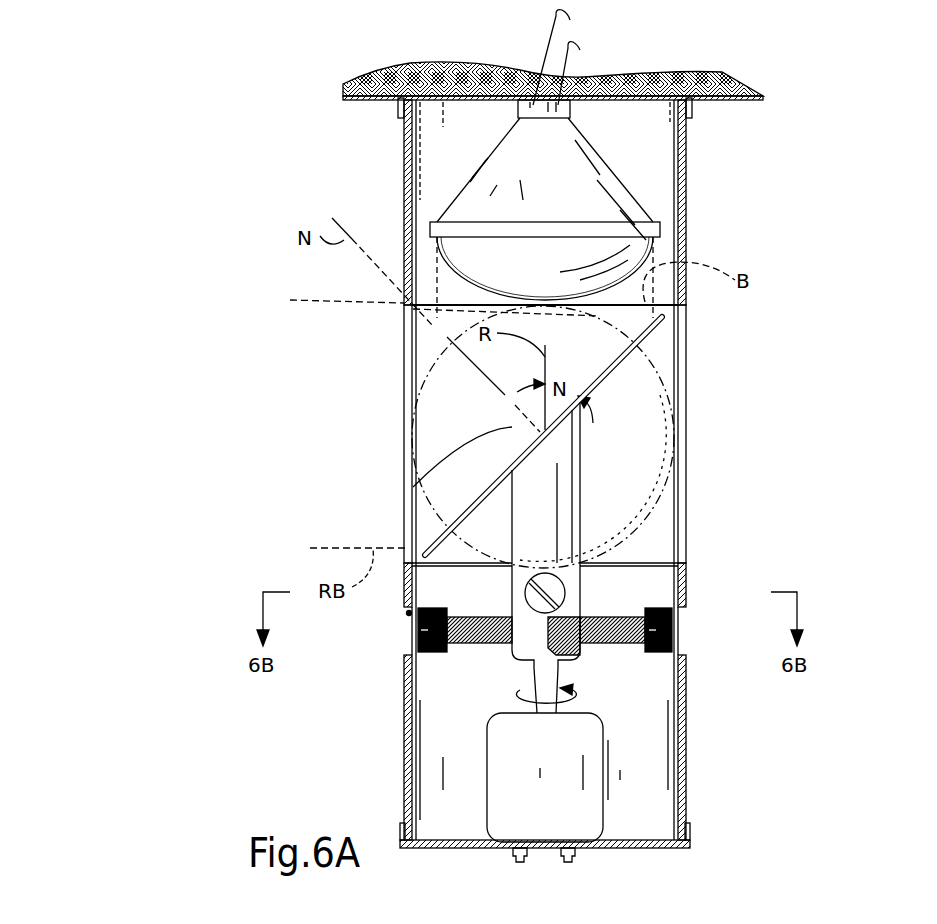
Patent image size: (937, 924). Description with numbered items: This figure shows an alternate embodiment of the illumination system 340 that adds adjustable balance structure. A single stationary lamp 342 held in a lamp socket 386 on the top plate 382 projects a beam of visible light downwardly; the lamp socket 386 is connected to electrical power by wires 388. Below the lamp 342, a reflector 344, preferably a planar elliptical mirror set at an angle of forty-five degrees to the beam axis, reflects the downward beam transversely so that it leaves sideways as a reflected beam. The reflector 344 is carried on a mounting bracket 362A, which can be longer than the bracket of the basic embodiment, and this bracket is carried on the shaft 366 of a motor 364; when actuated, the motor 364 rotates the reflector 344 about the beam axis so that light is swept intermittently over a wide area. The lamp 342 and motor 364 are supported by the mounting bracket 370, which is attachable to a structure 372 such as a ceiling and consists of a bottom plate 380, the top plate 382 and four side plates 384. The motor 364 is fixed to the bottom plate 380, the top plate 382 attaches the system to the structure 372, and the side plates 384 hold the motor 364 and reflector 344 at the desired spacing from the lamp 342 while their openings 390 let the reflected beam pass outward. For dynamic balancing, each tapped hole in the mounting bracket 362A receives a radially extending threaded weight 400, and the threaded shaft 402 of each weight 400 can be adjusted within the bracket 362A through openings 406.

The illumination system 340 is at (708, 227).
The lamp 342 is at (567, 170).
The reflector 344 is at (667, 318).
The mounting bracket 362A is at (557, 463).
The motor 364 is at (572, 738).
The shaft 366 is at (540, 675).
The mounting bracket 370 is at (402, 108).
The structure 372 is at (755, 85).
The bottom plate 380 is at (622, 840).
The top plate 382 is at (692, 108).
The side plates 384 is at (690, 792).
The lamp socket 386 is at (518, 106).
The wires 388 is at (574, 62).
The openings 390 is at (684, 495).
The threaded weight 400 is at (552, 574).
The threaded shaft 402 is at (470, 643).
The openings 406 is at (406, 614).